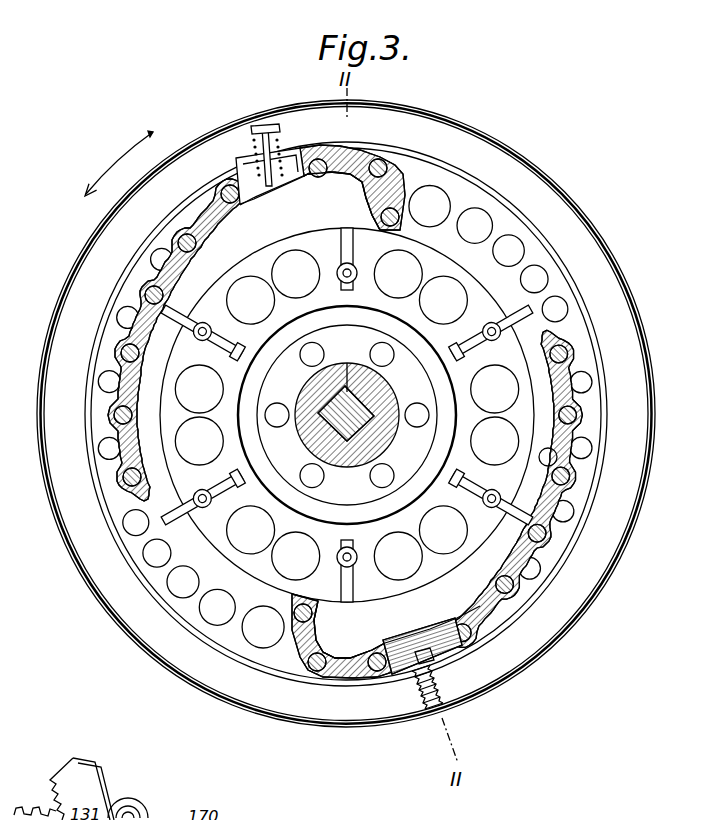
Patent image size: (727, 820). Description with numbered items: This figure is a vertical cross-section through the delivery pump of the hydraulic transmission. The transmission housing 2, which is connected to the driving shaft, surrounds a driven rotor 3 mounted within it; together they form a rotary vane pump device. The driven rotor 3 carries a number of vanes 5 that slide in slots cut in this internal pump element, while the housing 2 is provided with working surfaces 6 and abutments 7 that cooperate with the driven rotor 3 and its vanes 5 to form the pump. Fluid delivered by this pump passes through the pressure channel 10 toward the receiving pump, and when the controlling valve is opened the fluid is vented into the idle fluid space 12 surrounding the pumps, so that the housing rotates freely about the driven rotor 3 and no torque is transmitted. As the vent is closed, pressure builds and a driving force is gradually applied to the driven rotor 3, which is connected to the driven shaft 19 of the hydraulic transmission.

The transmission housing 2 is at (438, 114).
The driven rotor 3 is at (430, 268).
The vanes 5 is at (503, 310).
The working surfaces 6 is at (142, 338).
The abutments 7 is at (372, 155).
The pressure channel 10 is at (347, 180).
The idle fluid space 12 is at (345, 416).
The driven shaft 19 is at (355, 428).